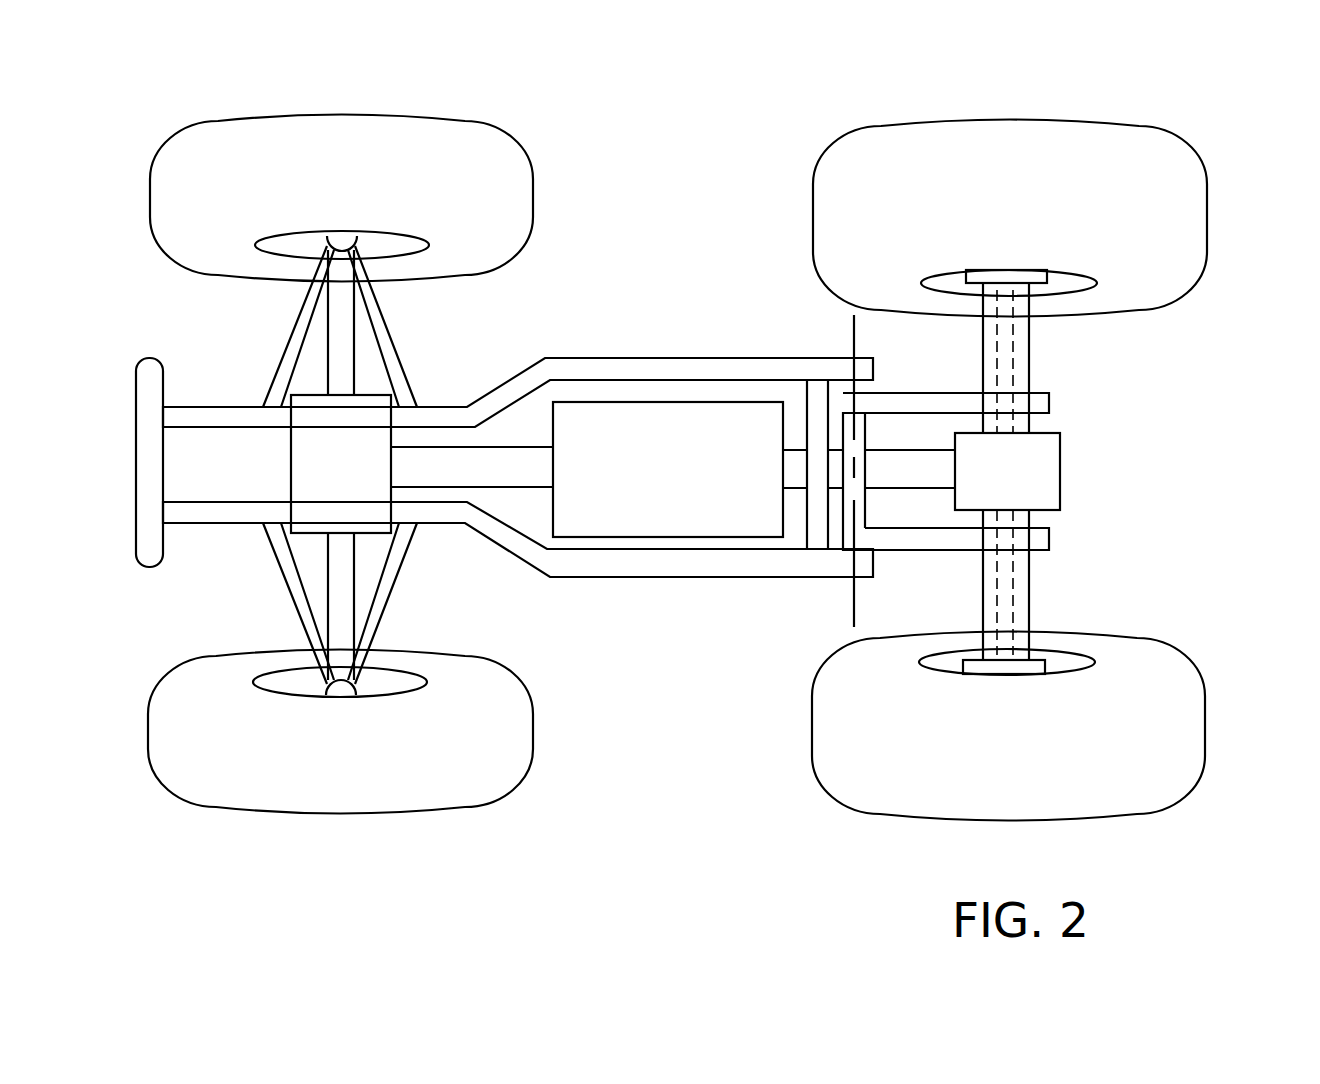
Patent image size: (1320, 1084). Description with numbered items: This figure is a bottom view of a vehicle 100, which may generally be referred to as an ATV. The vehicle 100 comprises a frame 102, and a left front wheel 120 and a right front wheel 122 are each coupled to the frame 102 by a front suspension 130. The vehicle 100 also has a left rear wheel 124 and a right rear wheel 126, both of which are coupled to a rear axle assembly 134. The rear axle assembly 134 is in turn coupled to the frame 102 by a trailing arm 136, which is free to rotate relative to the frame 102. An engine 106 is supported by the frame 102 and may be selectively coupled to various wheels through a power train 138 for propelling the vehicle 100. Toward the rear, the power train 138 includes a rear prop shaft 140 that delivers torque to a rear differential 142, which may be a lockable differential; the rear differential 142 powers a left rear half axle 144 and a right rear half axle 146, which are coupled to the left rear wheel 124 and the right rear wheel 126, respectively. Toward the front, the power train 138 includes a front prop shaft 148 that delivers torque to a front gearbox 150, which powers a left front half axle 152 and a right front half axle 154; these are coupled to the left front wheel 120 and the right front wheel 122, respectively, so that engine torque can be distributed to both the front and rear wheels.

The vehicle 100 is at (679, 506).
The frame 102 is at (504, 512).
The engine 106 is at (698, 425).
The left front wheel 120 is at (303, 732).
The right front wheel 122 is at (341, 182).
The left rear wheel 124 is at (1045, 726).
The right rear wheel 126 is at (1049, 218).
The front suspension 130 is at (380, 465).
The rear axle assembly 134 is at (991, 555).
The trailing arm 136 is at (998, 401).
The power train 138 is at (506, 524).
The rear prop shaft 140 is at (899, 508).
The rear differential 142 is at (1044, 465).
The left rear half axle 144 is at (1052, 585).
The right rear half axle 146 is at (1053, 358).
The front prop shaft 148 is at (472, 414).
The front gearbox 150 is at (300, 447).
The left front half axle 152 is at (277, 606).
The right front half axle 154 is at (287, 322).